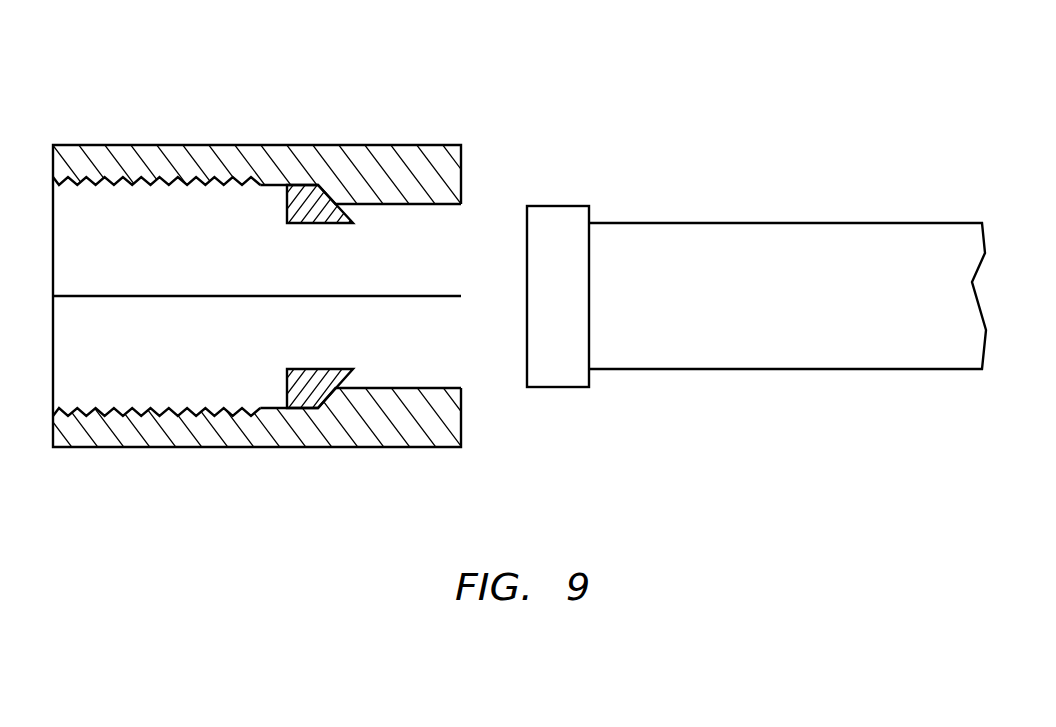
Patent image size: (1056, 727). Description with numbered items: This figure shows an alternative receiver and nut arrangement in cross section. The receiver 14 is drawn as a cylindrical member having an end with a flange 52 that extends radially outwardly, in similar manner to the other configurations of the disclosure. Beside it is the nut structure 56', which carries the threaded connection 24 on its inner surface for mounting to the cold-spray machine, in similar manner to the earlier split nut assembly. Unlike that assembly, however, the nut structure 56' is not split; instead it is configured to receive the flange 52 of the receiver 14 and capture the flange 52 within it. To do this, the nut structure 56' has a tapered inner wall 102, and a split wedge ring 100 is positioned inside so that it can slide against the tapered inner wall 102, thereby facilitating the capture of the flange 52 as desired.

The nut structure 56' is at (349, 234).
The threaded connection 24 is at (148, 180).
The tapered inner wall 102 is at (330, 193).
The split wedge ring 100 is at (297, 383).
The flange 52 is at (558, 206).
The receiver 14 is at (946, 173).